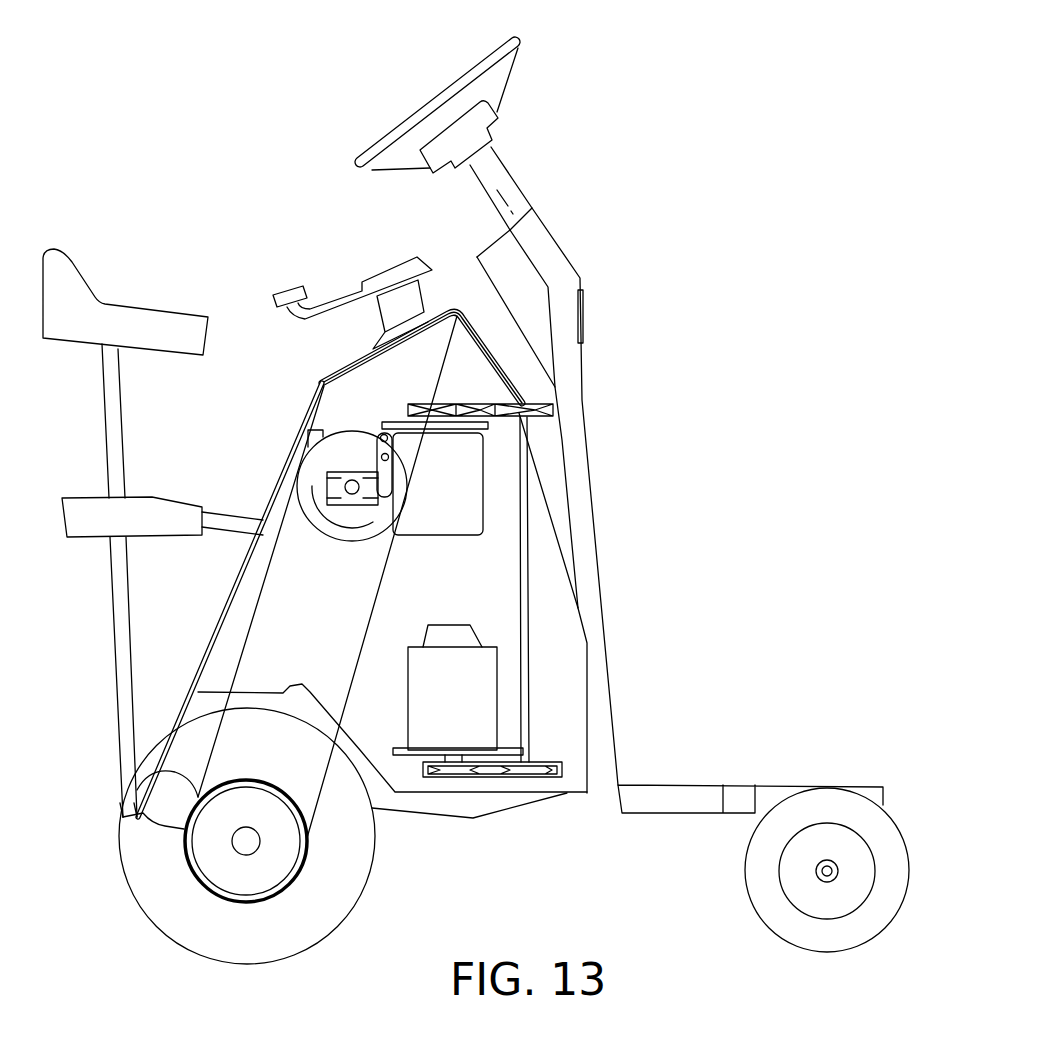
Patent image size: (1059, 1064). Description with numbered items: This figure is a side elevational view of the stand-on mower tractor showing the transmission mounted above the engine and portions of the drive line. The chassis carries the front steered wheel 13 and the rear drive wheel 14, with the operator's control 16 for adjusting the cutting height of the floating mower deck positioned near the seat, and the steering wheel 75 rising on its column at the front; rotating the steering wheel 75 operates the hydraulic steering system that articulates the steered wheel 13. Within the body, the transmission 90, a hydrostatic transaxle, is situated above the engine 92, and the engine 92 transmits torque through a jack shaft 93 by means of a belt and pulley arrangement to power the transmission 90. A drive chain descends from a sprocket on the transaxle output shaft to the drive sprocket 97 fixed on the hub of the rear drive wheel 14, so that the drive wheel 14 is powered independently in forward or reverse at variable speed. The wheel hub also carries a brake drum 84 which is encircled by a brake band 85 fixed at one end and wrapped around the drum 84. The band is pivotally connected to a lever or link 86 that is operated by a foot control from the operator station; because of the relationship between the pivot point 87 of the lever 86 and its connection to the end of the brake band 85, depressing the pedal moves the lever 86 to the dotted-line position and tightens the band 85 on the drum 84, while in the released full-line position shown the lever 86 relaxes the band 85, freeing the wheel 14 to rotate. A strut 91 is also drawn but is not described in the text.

The front steered wheel 13 is at (897, 822).
The rear drive wheel 14 is at (242, 970).
The control 16 is at (340, 297).
The steering wheel 75 is at (357, 167).
The brake drum 84 is at (306, 840).
The brake band 85 is at (244, 778).
The link (brake lever) 86 is at (150, 755).
The pivot point 87 is at (125, 805).
The transmission 90 is at (454, 488).
The support post 91 is at (519, 583).
The engine 92 is at (464, 705).
The jack shaft 93 is at (352, 543).
The drive sprocket 97 is at (262, 893).